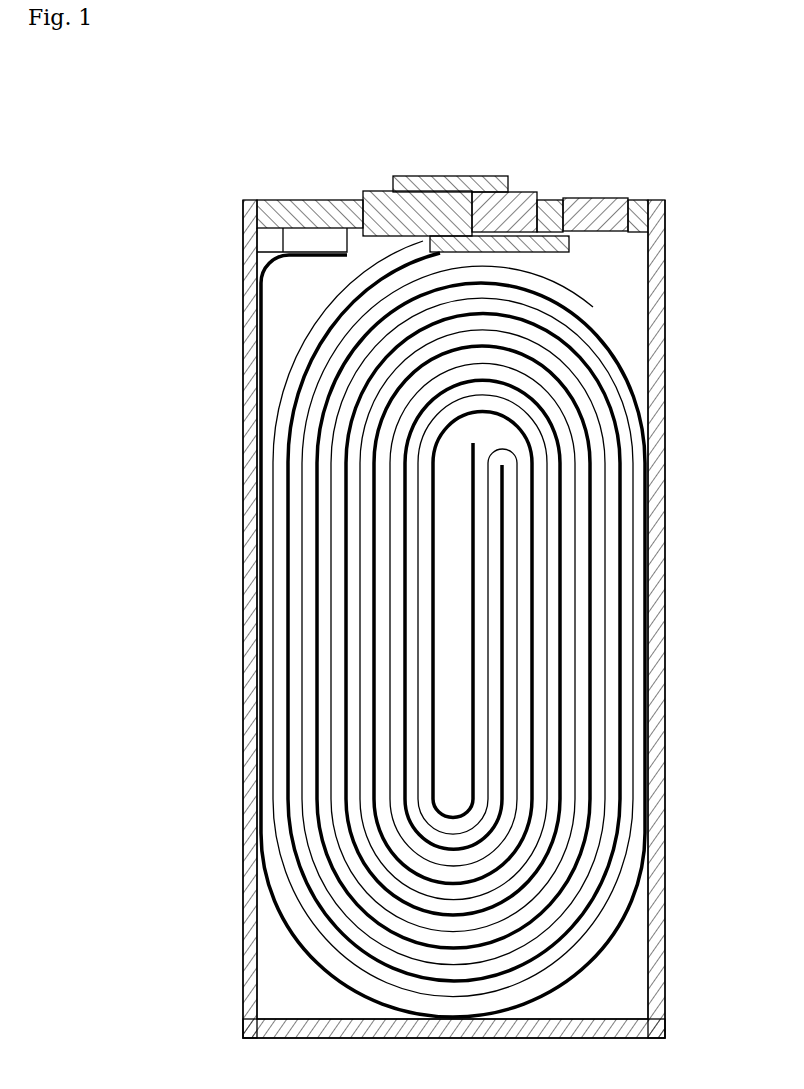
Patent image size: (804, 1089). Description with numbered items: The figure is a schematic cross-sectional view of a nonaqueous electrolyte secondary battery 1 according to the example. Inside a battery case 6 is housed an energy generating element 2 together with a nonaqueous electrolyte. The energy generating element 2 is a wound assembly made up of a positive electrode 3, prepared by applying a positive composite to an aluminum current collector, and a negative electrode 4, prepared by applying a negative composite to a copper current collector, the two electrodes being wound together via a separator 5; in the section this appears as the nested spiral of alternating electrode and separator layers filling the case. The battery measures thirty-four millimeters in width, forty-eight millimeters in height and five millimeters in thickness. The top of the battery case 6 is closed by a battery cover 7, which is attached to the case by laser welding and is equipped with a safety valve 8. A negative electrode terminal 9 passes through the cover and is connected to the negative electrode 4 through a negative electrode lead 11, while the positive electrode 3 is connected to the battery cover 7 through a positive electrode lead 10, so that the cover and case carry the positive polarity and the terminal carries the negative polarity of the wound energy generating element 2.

The nonaqueous electrolyte secondary battery 1 is at (237, 783).
The energy generating element 2 is at (425, 562).
The positive electrode 3 is at (613, 345).
The negative electrode 4 is at (628, 735).
The separator 5 is at (582, 292).
The battery case 6 is at (663, 490).
The battery cover 7 is at (293, 200).
The safety valve 8 is at (593, 205).
The negative electrode terminal 9 is at (452, 190).
The positive electrode lead 10 is at (270, 260).
The negative electrode lead 11 is at (323, 338).